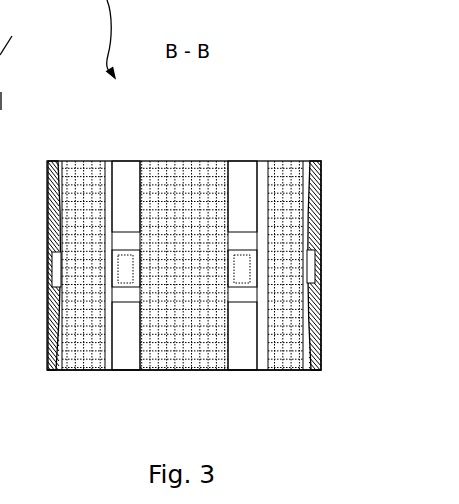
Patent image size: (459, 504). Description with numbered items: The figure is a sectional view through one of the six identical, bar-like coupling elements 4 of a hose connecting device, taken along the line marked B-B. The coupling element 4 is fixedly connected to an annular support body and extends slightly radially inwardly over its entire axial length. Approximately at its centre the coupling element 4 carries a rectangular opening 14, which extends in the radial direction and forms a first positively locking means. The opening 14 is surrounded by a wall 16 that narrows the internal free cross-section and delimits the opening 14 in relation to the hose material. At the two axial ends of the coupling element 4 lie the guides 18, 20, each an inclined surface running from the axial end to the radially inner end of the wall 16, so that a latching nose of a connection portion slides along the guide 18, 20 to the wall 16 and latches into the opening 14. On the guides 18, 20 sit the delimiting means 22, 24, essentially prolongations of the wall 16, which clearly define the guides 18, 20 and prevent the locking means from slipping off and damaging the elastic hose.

The coupling element 4 is at (328, 224).
The opening 14 is at (129, 267).
The wall 16 is at (101, 267).
The guide 18 is at (121, 187).
The guide 20 is at (312, 345).
The delimiting means 22 is at (62, 163).
The delimiting means 24 is at (52, 374).